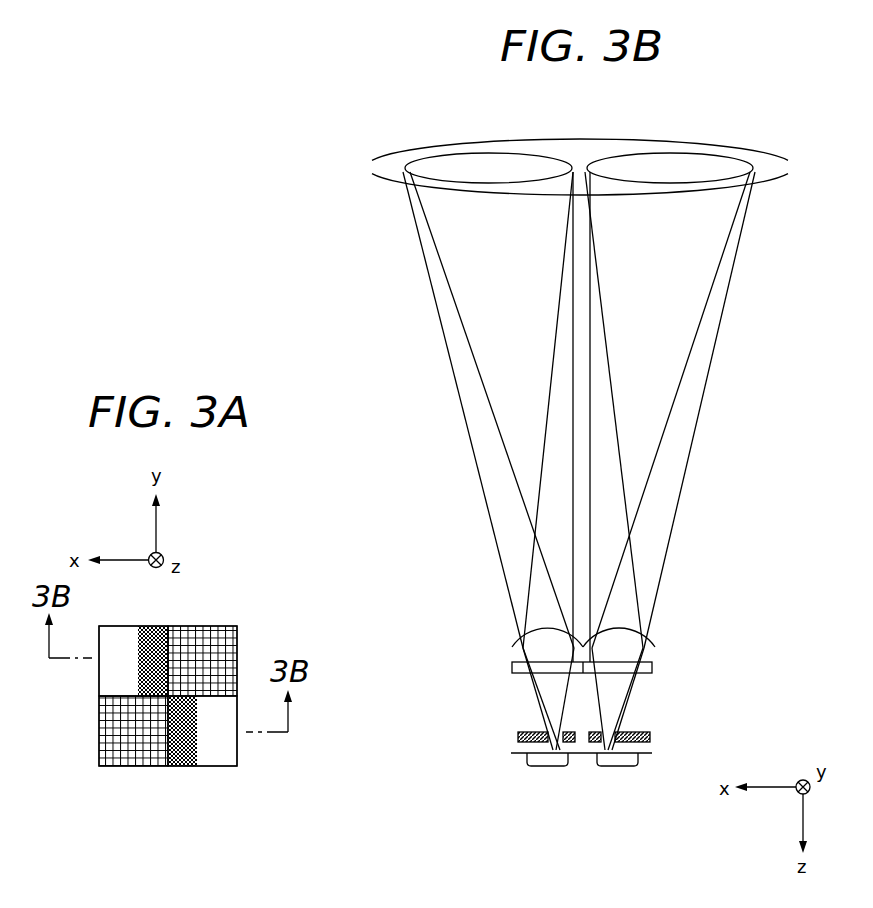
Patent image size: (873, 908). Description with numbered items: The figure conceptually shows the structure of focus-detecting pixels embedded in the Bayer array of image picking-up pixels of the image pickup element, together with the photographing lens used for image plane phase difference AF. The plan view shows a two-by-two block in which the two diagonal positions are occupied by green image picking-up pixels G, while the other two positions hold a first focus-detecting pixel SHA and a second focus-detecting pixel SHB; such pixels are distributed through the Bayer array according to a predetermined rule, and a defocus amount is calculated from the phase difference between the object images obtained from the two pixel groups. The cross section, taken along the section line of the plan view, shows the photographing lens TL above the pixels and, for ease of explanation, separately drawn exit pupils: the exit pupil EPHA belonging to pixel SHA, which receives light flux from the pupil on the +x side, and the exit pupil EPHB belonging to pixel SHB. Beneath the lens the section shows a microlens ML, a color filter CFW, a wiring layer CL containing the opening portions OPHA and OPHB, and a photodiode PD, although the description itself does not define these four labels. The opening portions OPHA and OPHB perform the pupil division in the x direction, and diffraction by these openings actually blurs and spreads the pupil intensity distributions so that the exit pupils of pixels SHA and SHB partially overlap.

In FIG. 3B, the photographing lens TL is at (392, 163).
In FIG. 3B, the exit pupil area EP_HA EPHA is at (465, 170).
In FIG. 3B, the exit pupil area EP_HB EPHB is at (688, 170).
In FIG. 3B, the microlens ML is at (548, 632).
In FIG. 3B, the white color filter CFW is at (688, 632).
In FIG. 3B, the opening portion OP_HA OPHA is at (547, 721).
In FIG. 3B, the opening portion OP_HB OPHB is at (618, 723).
In FIG. 3B, the wiring layer CL is at (648, 732).
In FIG. 3B, the photodiode PD is at (548, 764).
In FIG. 3A, the first pixel group S_HA SHA is at (133, 661).
In FIG. 3A, the second pixel group S_HB SHB is at (202, 731).
In FIG. 3A, the green pixel G is at (168, 696).